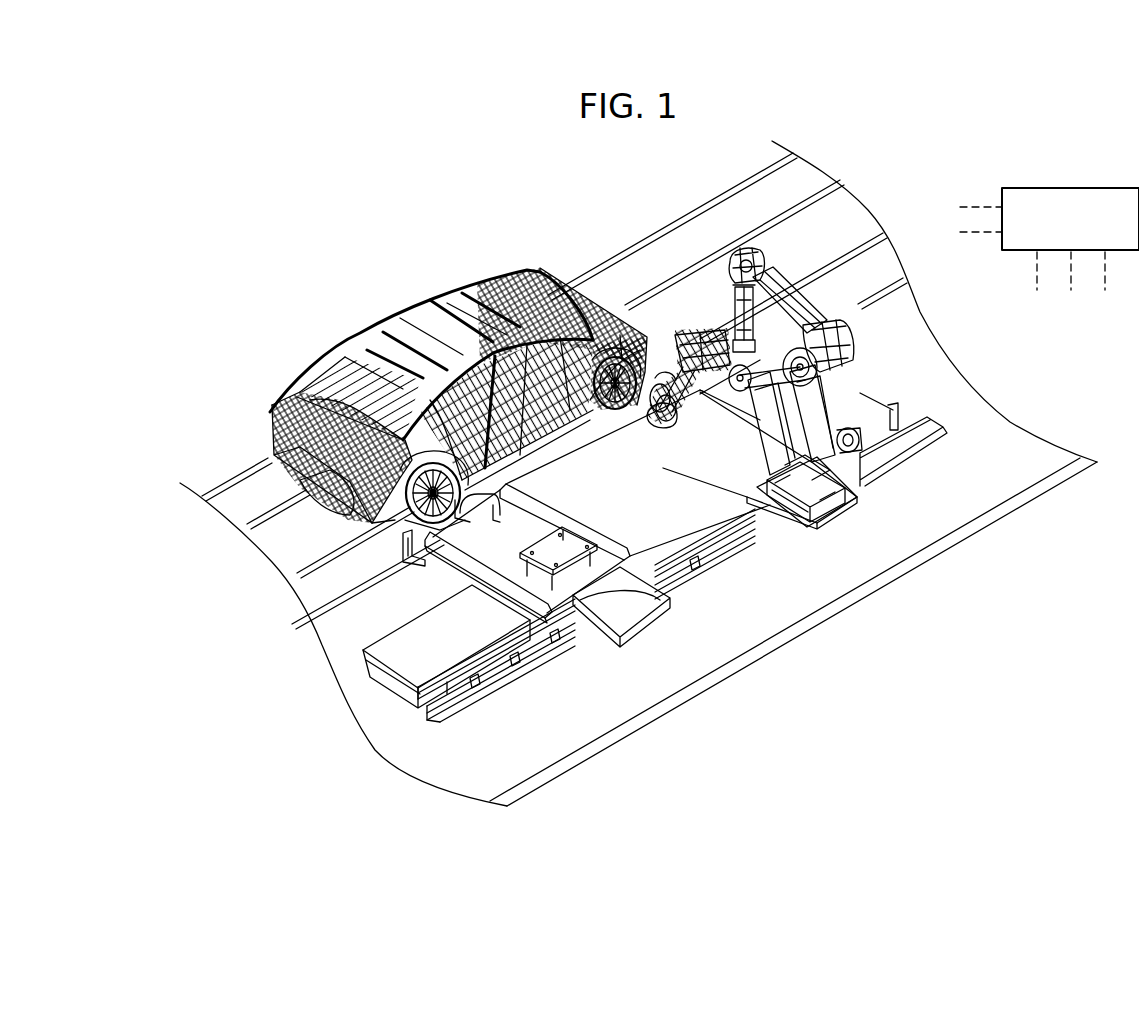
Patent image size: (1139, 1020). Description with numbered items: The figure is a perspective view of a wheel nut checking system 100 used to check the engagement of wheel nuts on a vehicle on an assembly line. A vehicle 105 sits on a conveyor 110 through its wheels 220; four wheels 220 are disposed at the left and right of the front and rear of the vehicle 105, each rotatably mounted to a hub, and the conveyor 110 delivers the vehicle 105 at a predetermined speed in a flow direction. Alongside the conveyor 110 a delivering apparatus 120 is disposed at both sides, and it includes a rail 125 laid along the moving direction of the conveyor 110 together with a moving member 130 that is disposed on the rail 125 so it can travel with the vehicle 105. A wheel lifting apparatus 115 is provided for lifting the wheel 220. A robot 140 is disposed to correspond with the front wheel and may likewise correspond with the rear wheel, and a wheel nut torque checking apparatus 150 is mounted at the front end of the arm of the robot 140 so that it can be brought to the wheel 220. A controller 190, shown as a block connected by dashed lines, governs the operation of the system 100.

The wheel nut checking system 100 is at (950, 655).
The vehicle 105 is at (387, 304).
The conveyor 110 is at (320, 582).
The wheel lifting apparatus 115 is at (396, 557).
The delivering apparatus 120 is at (396, 674).
The rail 125 is at (420, 698).
The moving member 130 is at (548, 598).
The robot 140 is at (858, 346).
The wheel nut torque checking apparatus 150 is at (660, 368).
The controller 190 is at (1071, 188).
The wheel 220 is at (377, 532).